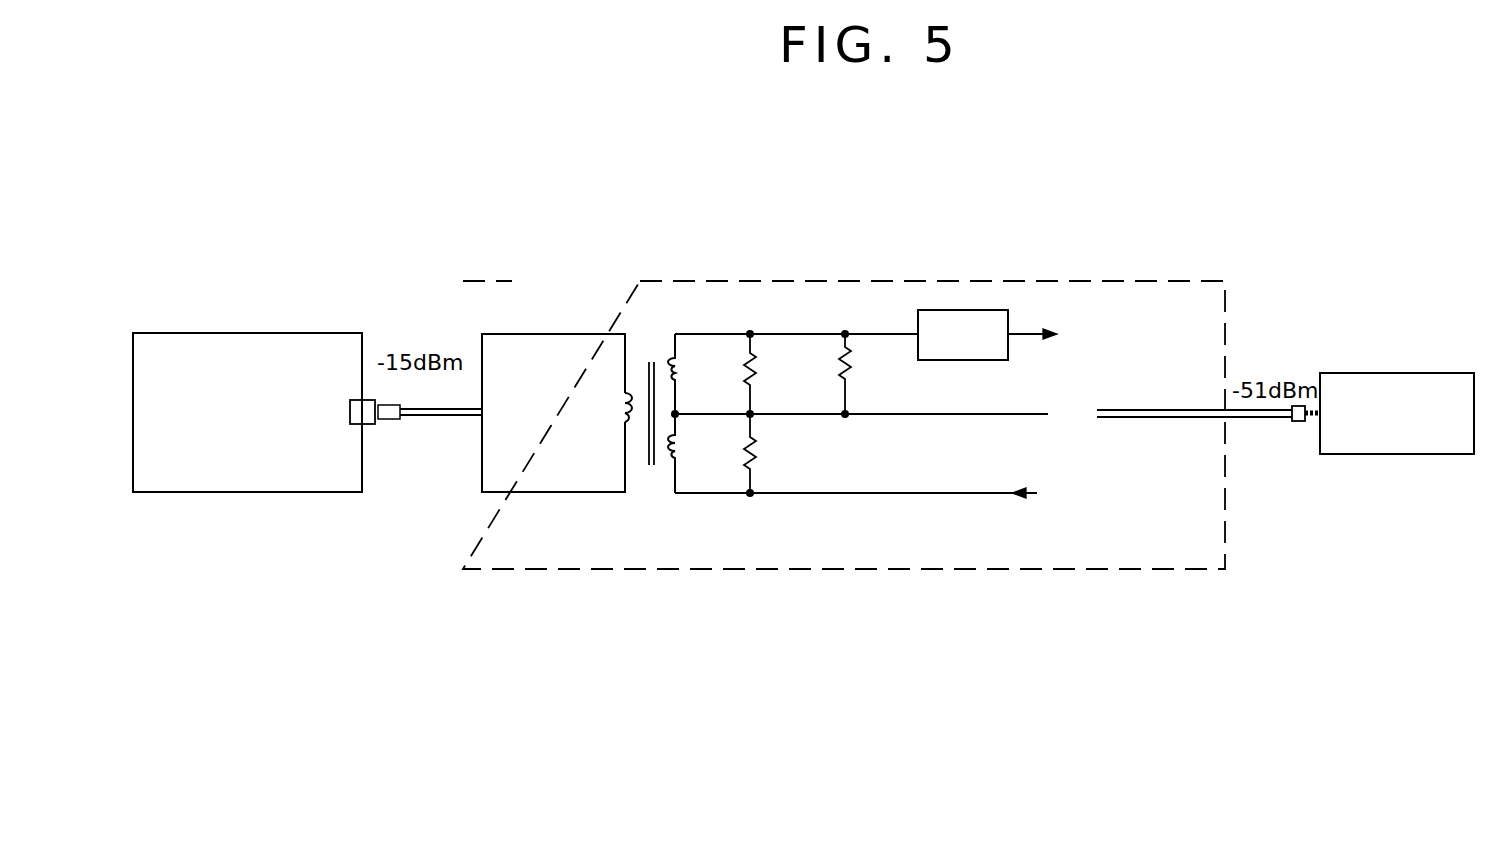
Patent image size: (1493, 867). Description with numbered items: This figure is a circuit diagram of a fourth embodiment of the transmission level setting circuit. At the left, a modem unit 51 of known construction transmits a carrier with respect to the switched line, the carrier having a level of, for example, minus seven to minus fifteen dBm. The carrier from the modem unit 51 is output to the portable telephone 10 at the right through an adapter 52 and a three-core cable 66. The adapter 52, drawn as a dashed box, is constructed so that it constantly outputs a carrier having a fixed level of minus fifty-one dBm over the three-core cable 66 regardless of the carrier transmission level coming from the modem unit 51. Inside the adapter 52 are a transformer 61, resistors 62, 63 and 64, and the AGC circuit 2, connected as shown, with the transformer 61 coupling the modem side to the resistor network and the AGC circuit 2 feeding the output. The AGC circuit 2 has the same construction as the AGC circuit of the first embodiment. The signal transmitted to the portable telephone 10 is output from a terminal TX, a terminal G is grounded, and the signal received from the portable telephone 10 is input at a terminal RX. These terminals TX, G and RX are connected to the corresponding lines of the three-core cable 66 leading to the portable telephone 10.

The modem unit 51 is at (282, 493).
The adapter 52 is at (950, 281).
The transformer 61 is at (653, 358).
The resistor 62 is at (746, 362).
The resistor 63 is at (856, 366).
The resistor 64 is at (760, 453).
The AGC circuit 2 is at (1010, 323).
The three-core cable 66 is at (1252, 420).
The portable telephone 10 is at (1385, 373).